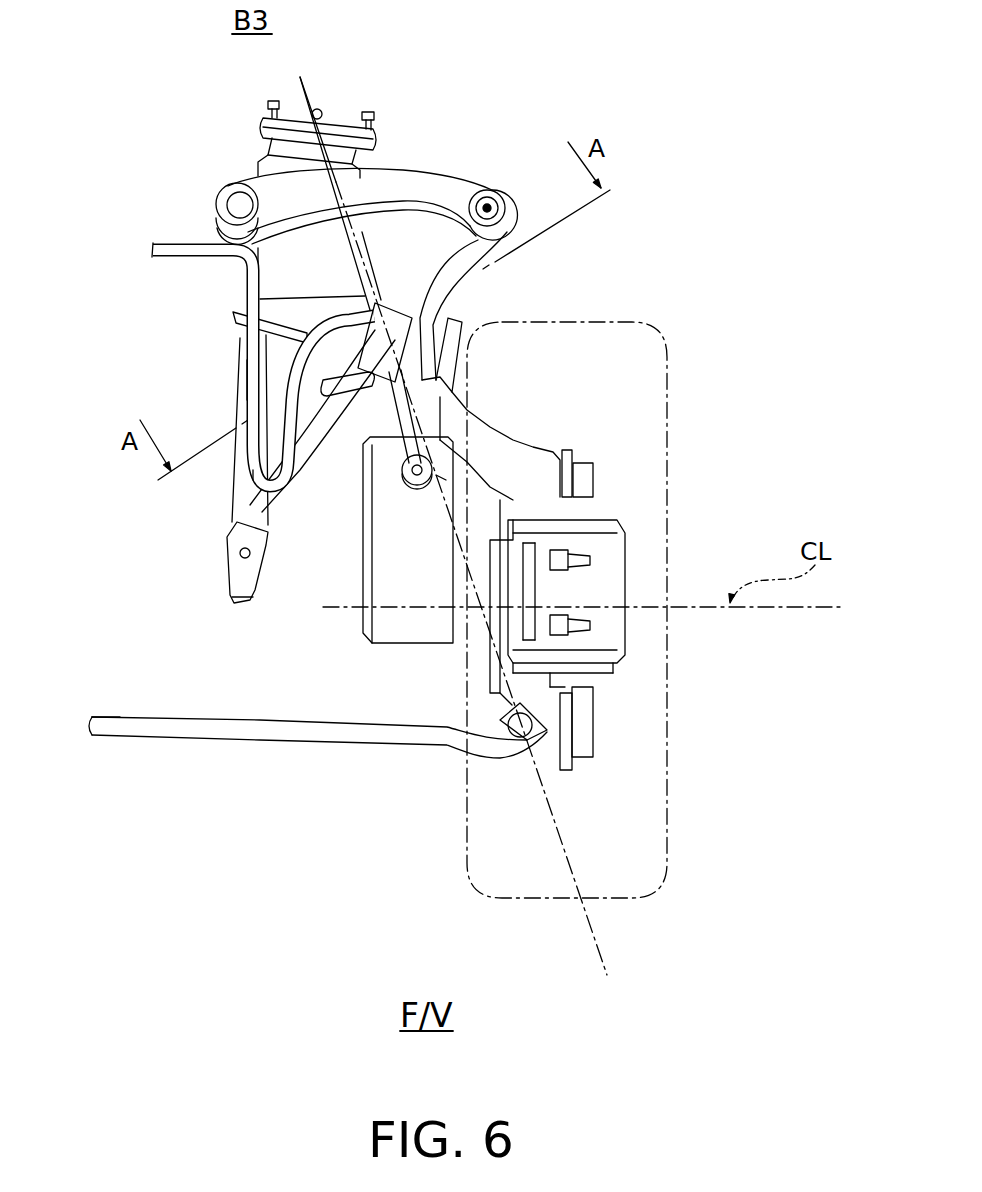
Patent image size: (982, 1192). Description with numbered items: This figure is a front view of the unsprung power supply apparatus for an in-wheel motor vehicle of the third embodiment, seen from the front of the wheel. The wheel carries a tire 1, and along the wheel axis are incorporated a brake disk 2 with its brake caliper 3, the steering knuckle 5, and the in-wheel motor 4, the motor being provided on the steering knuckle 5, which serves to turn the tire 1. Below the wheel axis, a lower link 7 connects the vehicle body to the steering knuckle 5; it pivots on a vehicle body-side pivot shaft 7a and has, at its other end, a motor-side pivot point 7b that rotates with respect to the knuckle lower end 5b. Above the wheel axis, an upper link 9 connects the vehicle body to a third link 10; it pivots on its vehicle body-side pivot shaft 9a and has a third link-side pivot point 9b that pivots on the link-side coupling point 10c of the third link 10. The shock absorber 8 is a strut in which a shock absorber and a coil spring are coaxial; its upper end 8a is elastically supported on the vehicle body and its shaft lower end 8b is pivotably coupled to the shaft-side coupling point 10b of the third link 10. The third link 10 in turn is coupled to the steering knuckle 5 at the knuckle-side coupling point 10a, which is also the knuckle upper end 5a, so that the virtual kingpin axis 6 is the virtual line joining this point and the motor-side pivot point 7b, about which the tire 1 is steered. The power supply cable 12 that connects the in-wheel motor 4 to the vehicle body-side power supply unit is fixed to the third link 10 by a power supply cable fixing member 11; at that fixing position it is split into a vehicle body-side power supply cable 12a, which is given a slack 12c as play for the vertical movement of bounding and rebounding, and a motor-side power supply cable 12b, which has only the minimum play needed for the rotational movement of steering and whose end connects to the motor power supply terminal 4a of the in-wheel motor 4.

The tire 1 is at (636, 312).
The brake disk 2 is at (598, 482).
The brake caliper 3 is at (627, 552).
The in-wheel motor 4 is at (392, 648).
The motor power supply terminal 4a is at (434, 482).
The steering knuckle 5 is at (535, 442).
The upper end of the steering knuckle 5a is at (468, 318).
The lower end of the steering knuckle 5b is at (522, 734).
The virtual kingpin axis 6 is at (565, 812).
The lower link 7 is at (366, 747).
The vehicle body-side pivot shaft 7a is at (120, 717).
The motor-side pivot point 7b is at (458, 778).
The shock absorber 8 is at (258, 162).
The upper end of the shock absorber 8a is at (321, 110).
The lower end of the shock absorber shaft 8b is at (165, 562).
The upper link 9 is at (413, 172).
The vehicle body-side pivot shaft 9a is at (228, 187).
The third link-side pivot point 9b is at (529, 164).
The third link 10 is at (447, 265).
The knuckle-side coupling point 10a is at (521, 339).
The shaft-side coupling point 10b is at (240, 552).
The link-side coupling point 10c is at (488, 204).
The power supply cable fixing member 11 is at (340, 293).
The power supply cable 12 is at (198, 250).
The vehicle body-side power supply cable 12a is at (246, 373).
The motor-side power supply cable 12b is at (390, 392).
The slack 12c is at (190, 515).